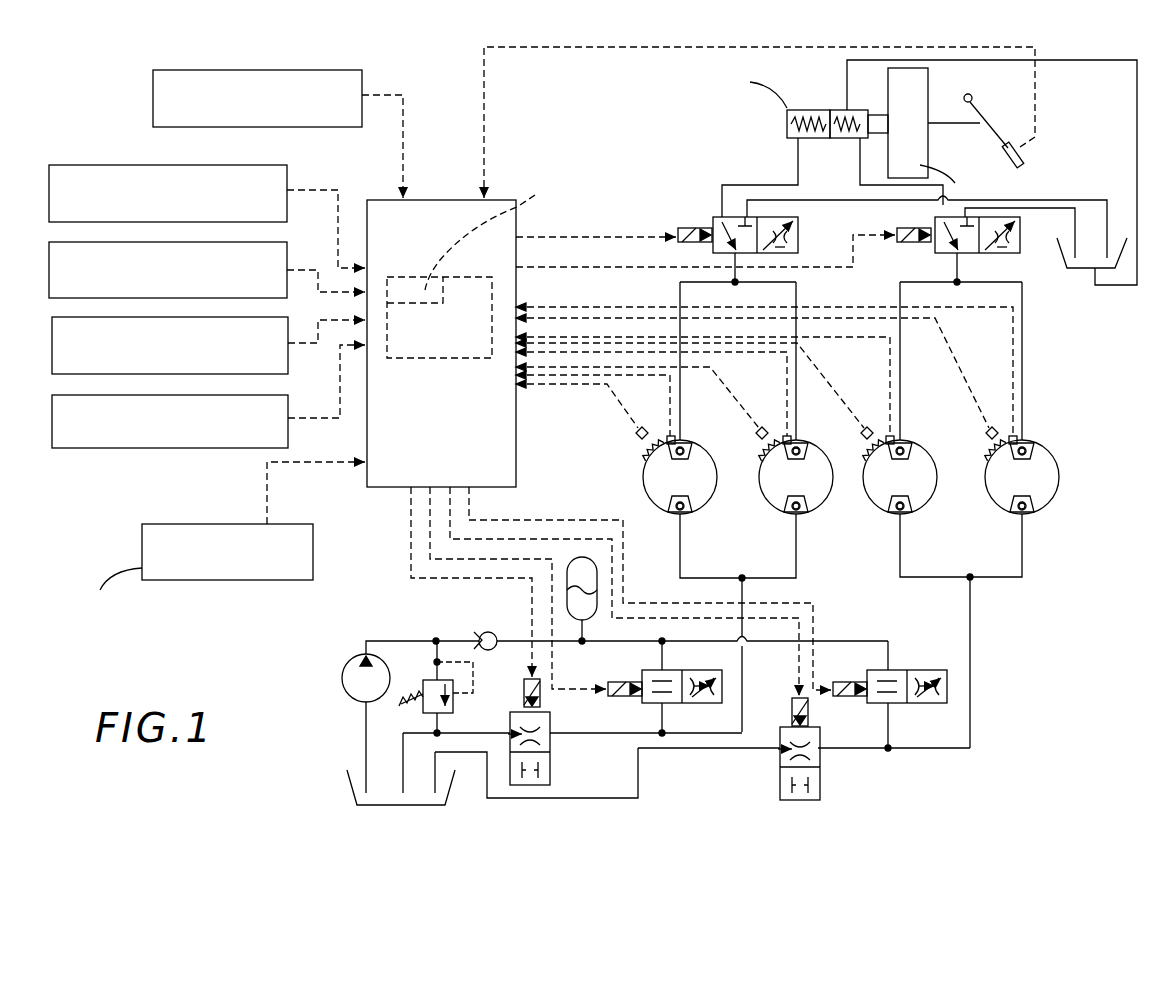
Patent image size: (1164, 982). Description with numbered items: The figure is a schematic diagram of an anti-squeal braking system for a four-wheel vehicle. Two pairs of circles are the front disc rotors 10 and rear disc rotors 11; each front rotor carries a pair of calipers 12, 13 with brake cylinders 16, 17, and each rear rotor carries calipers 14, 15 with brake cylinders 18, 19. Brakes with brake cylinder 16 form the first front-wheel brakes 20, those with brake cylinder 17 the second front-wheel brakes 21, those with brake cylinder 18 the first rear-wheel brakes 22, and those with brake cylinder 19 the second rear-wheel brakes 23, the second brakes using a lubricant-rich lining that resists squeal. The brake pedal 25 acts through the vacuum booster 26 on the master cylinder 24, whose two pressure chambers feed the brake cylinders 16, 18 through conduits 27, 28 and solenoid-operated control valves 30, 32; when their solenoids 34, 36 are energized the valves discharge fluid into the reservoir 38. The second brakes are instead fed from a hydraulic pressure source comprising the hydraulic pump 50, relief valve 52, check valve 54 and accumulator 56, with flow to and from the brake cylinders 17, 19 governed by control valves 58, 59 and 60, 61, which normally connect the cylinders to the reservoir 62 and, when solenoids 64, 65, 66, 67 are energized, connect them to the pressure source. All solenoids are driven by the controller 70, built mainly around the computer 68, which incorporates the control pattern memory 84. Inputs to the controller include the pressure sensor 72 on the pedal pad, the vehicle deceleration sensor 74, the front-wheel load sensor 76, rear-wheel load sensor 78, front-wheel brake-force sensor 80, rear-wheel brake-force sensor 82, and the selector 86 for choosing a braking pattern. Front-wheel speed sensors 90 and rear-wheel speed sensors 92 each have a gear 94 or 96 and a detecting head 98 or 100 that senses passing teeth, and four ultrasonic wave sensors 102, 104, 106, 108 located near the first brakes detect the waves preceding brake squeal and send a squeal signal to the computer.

The front disc rotor 10 is at (655, 488).
The rear disc rotor 11 is at (920, 493).
The caliper 12 is at (691, 450).
The caliper 13 is at (672, 509).
The caliper 14 is at (910, 453).
The caliper 15 is at (909, 510).
The brake cylinder 16 is at (645, 477).
The brake cylinder 17 is at (684, 512).
The brake cylinder 18 is at (906, 462).
The brake cylinder 19 is at (893, 513).
The first front-wheel brake 20 is at (689, 436).
The second front-wheel brake 21 is at (670, 527).
The first rear-wheel brake 22 is at (912, 436).
The second rear-wheel brake 23 is at (909, 524).
The master cylinder 24 is at (818, 110).
The brake pedal 25 is at (982, 128).
The vacuum booster 26 is at (918, 150).
The conduit 27 is at (752, 185).
The conduit 28 is at (858, 160).
The solenoid-operated control valve 30 is at (800, 235).
The solenoid-operated control valve 32 is at (1008, 255).
The solenoid 34 is at (694, 228).
The solenoid 36 is at (901, 242).
The reservoir 38 is at (1080, 270).
The hydraulic pump 50 is at (343, 672).
The relief valve 52 is at (455, 708).
The check valve 54 is at (484, 633).
The accumulator 56 is at (570, 605).
The solenoid-operated control valve 58 is at (648, 670).
The solenoid-operated control valve 59 is at (552, 762).
The solenoid-operated control valve 60 is at (932, 670).
The solenoid-operated control valve 61 is at (818, 780).
The reservoir 62 is at (347, 787).
The solenoid 64 is at (614, 698).
The solenoid 65 is at (522, 699).
The solenoid 66 is at (840, 682).
The solenoid 67 is at (790, 705).
The computer 68 is at (490, 297).
The controller 70 is at (516, 413).
The pressure sensor 72 is at (1022, 157).
The vehicle deceleration sensor 74 is at (153, 88).
The front-wheel load sensor 76 is at (112, 165).
The rear-wheel load sensor 78 is at (285, 248).
The front-wheel brake-force sensor 80 is at (283, 357).
The rear-wheel brake-force sensor 82 is at (175, 448).
The control pattern memory 84 is at (400, 277).
The selector 86 is at (142, 551).
The front-wheel speed sensor 90 is at (632, 445).
The rear-wheel speed sensor 92 is at (978, 447).
The gear 94 is at (641, 455).
The gear 96 is at (852, 457).
The detecting head 98 is at (637, 429).
The detecting head 100 is at (866, 427).
The ultrasonic wave sensor 102 is at (666, 435).
The ultrasonic wave sensor 104 is at (788, 436).
The ultrasonic wave sensor 106 is at (903, 438).
The ultrasonic wave sensor 108 is at (1018, 437).